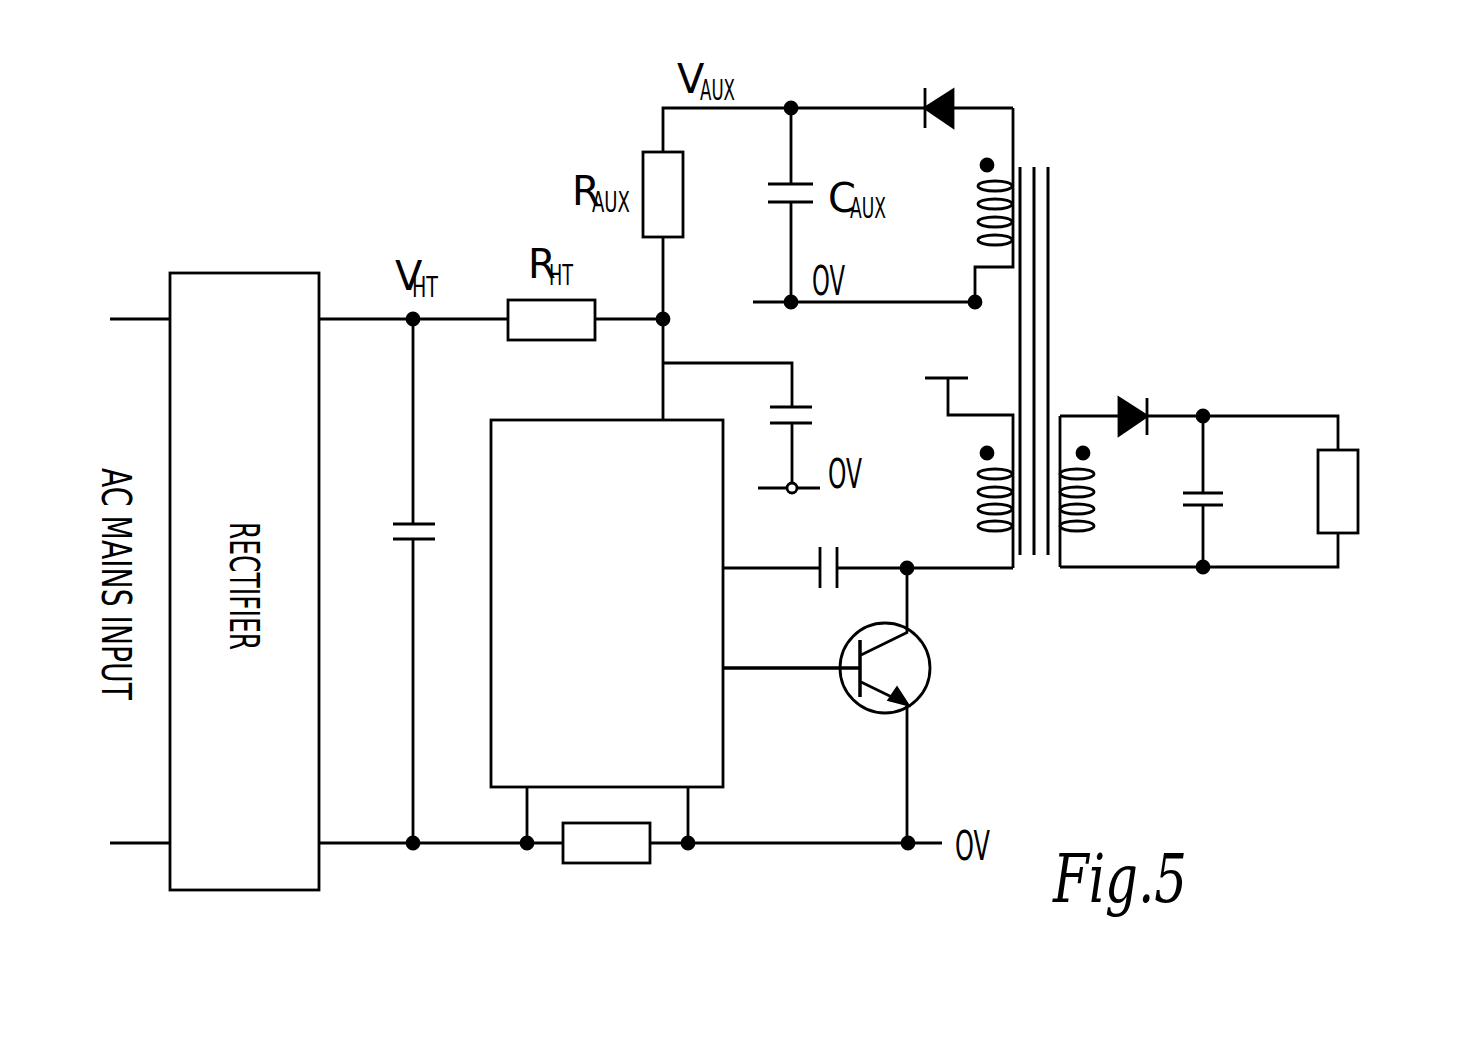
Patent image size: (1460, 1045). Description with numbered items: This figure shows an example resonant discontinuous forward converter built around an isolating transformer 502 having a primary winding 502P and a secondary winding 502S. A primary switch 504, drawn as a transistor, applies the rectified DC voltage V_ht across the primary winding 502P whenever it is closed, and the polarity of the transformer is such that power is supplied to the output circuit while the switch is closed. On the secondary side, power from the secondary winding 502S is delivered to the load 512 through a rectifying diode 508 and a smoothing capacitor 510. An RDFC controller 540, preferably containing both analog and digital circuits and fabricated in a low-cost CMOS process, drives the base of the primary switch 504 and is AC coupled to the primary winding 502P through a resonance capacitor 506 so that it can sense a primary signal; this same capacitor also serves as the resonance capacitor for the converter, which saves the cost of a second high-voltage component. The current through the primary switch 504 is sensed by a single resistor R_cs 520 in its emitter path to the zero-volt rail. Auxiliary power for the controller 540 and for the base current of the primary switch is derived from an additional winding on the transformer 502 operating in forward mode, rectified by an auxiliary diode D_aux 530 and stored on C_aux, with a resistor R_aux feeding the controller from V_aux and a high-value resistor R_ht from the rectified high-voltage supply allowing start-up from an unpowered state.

The isolating transformer 502 is at (1038, 560).
The primary winding 502P is at (978, 512).
The secondary winding 502S is at (1094, 526).
The switch 504 is at (862, 705).
The resonance capacitor 506 is at (820, 551).
The rectifying diode 508 is at (1126, 433).
The smoothing capacitor 510 is at (1224, 490).
The load 512 is at (1355, 535).
The current sense resistor 520 is at (576, 864).
The auxiliary diode D_AUX 530 is at (942, 124).
The RDFC controller 540 is at (563, 420).